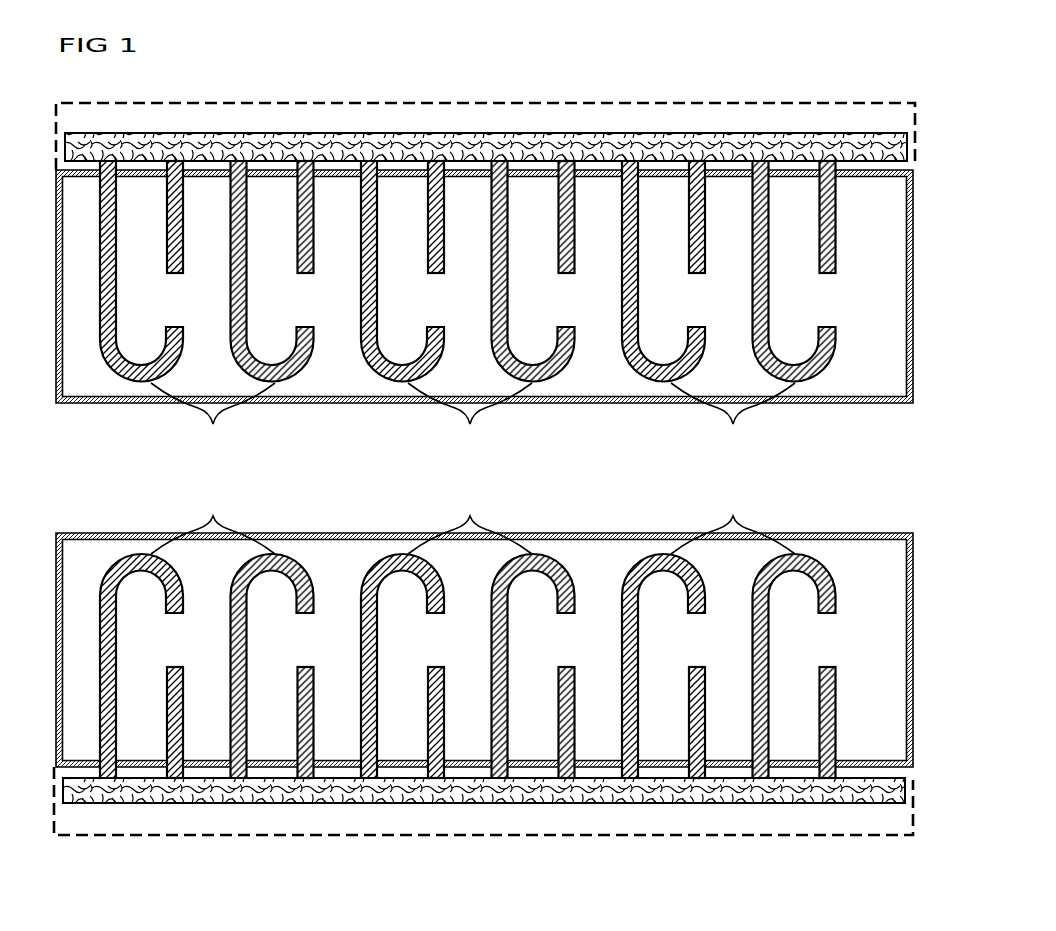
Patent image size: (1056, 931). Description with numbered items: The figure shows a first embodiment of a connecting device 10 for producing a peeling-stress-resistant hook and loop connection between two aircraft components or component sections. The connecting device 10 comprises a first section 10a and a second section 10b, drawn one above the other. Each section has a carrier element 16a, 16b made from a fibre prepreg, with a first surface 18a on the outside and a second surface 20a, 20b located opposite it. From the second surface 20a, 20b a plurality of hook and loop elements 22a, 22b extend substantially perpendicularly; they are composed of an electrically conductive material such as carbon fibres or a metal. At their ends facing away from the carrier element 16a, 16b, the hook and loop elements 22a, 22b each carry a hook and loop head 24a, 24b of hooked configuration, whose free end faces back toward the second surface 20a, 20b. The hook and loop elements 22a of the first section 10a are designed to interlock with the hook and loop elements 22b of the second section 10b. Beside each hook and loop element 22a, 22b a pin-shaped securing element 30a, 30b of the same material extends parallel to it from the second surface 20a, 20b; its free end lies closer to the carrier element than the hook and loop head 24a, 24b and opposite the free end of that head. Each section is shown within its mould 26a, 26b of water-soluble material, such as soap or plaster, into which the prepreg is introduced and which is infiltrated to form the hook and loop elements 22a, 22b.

The connecting device 10 is at (975, 459).
The first section 10a is at (948, 198).
The second section 10b is at (953, 744).
The carrier element 16a is at (522, 140).
The carrier element 16b is at (520, 798).
The first surface 18a is at (745, 133).
The second surface 20a is at (857, 158).
The second surface 20b is at (853, 786).
The hook and loop element 22a is at (230, 290).
The hook and loop element 22b is at (230, 628).
The hook and loop head 24a is at (473, 418).
The hook and loop head 24b is at (473, 520).
The mould 26a is at (897, 283).
The mould 26b is at (895, 658).
The securing element 30a is at (167, 222).
The securing element 30b is at (167, 720).